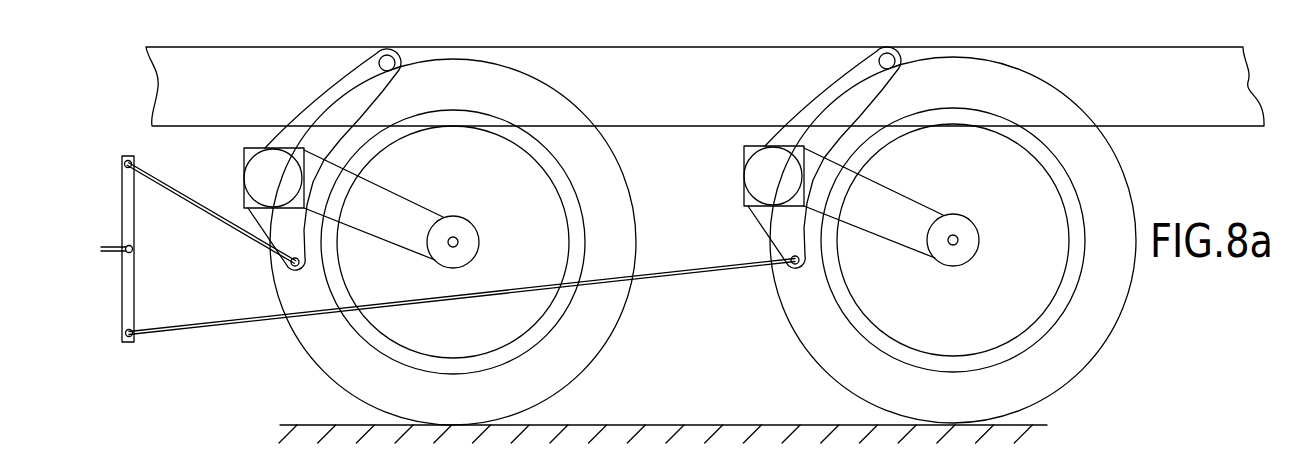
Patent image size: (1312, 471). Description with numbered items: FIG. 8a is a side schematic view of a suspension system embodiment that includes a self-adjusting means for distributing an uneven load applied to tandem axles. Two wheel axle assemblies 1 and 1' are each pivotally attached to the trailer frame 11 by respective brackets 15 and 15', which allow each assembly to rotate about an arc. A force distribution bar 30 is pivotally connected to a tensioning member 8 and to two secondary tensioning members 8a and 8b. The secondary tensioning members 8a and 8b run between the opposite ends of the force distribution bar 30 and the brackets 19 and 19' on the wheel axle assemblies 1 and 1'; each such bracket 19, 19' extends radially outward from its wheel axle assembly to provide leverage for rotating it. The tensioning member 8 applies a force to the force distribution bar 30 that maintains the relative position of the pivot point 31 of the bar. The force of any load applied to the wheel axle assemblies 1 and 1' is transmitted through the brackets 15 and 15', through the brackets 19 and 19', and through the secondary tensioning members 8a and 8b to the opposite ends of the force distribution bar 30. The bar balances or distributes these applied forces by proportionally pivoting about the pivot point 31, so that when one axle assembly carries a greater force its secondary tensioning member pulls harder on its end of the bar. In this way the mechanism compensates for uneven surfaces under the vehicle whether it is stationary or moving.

The wheel axle assembly 1 is at (440, 217).
The wheel axle assembly 1' is at (940, 216).
The trailer frame 11 is at (713, 68).
The bracket 15 is at (322, 159).
The bracket 15' is at (822, 157).
The bracket 19 is at (336, 264).
The bracket 19' is at (847, 268).
The tensioning member 8 is at (446, 272).
The secondary tensioning member 8a is at (218, 218).
The secondary tensioning member 8b is at (237, 326).
The force distribution bar 30 is at (138, 289).
The pivot point 31 is at (136, 247).